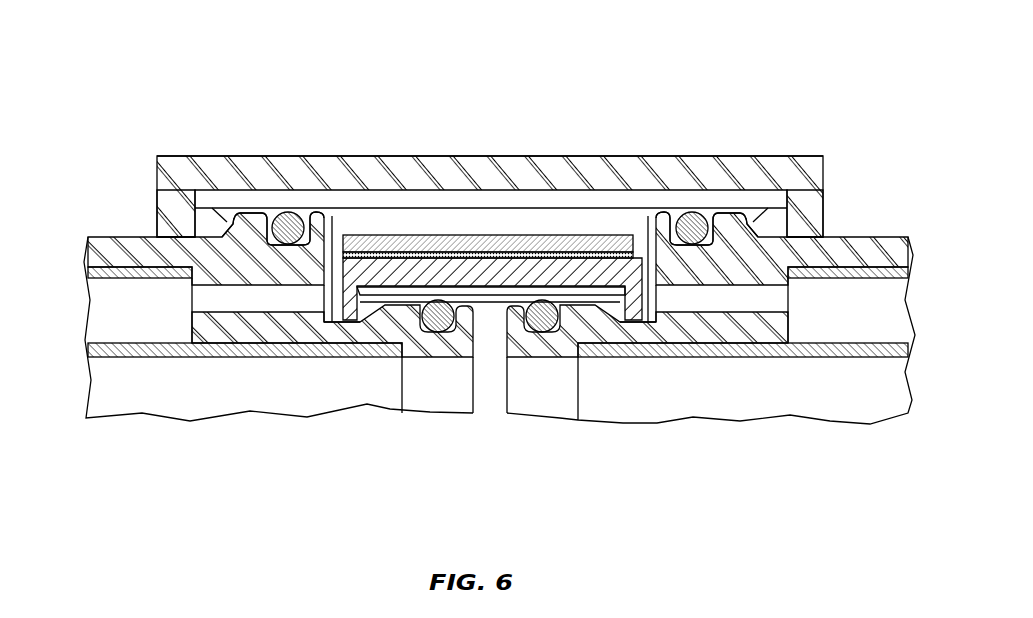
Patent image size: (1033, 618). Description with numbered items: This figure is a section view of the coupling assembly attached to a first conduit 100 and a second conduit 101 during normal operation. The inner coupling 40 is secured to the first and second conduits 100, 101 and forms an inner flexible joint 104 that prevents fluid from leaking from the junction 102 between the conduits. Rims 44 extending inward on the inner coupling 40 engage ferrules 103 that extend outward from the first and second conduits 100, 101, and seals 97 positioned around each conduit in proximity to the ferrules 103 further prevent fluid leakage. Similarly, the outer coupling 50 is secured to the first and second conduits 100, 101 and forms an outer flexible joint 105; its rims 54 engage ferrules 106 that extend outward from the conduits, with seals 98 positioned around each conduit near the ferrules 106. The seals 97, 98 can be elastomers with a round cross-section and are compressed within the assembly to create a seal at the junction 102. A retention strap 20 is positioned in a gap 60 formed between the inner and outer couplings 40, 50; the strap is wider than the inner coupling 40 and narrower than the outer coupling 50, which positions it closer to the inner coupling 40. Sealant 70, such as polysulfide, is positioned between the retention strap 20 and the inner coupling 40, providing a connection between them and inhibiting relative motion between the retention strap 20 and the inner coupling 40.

The retention strap 20 is at (527, 240).
The inner coupling 40 is at (553, 273).
The rims 44 is at (347, 316).
The outer coupling 50 is at (281, 165).
The rims 54 is at (177, 205).
The gap 60 is at (490, 218).
The sealant 70 is at (445, 253).
The seals 97 is at (433, 330).
The seals 98 is at (298, 212).
The first conduit 100 is at (127, 250).
The second conduit 101 is at (837, 250).
The junction 102 is at (488, 398).
The ferrules 103 is at (403, 318).
The inner flexible joint 104 is at (323, 320).
The outer flexible joint 105 is at (360, 153).
The ferrules 106 is at (247, 217).